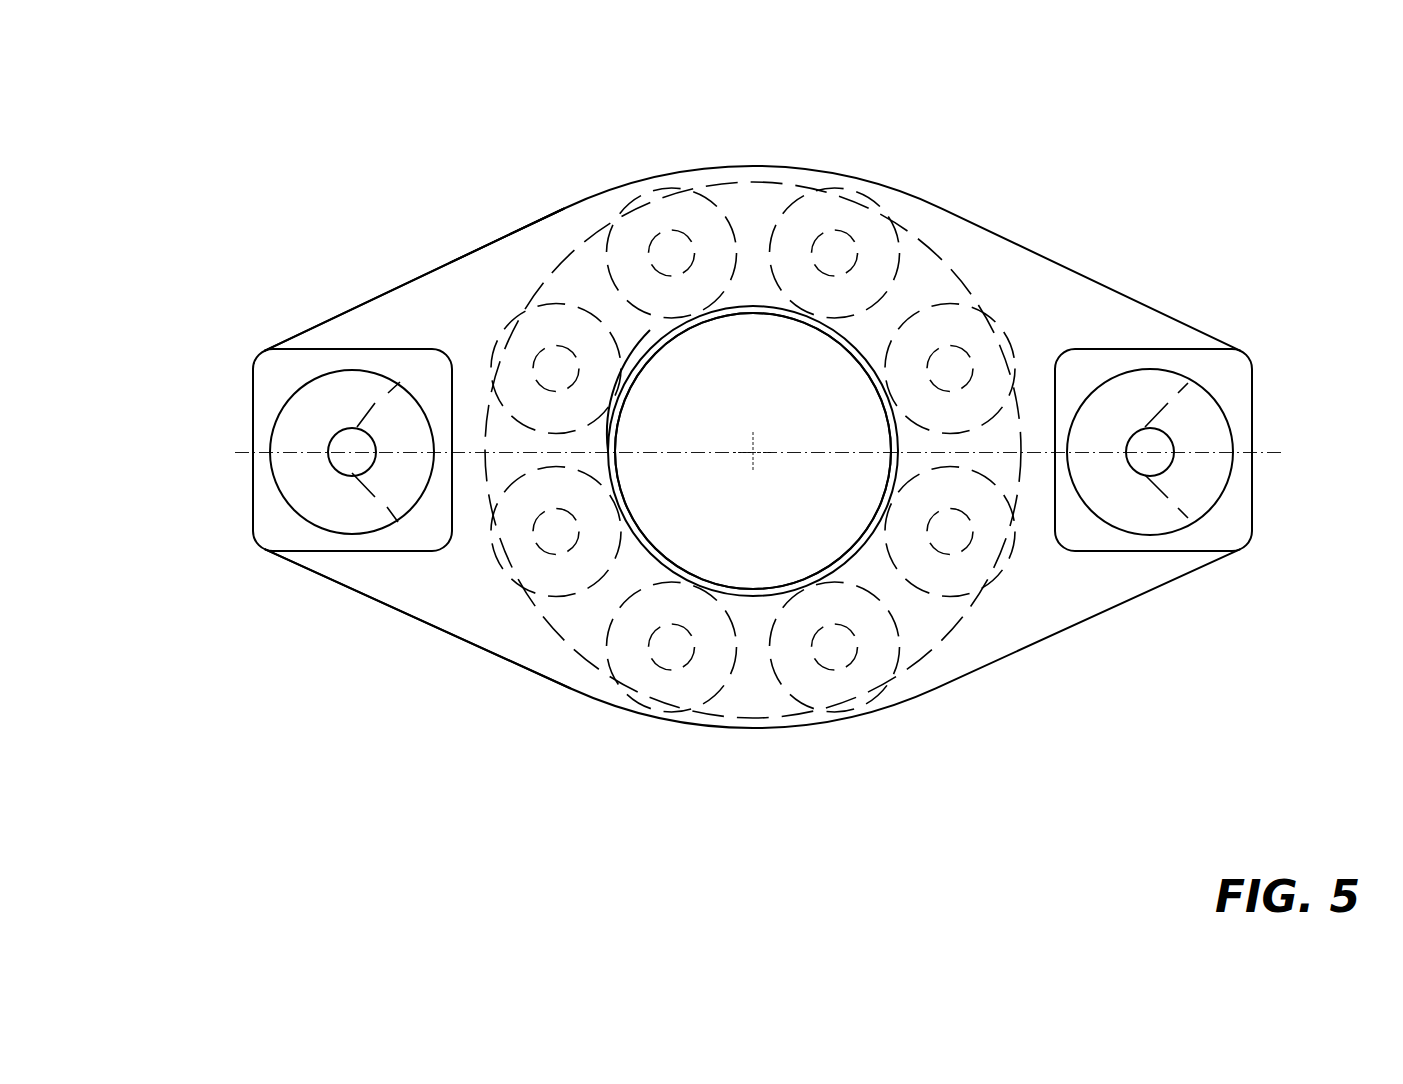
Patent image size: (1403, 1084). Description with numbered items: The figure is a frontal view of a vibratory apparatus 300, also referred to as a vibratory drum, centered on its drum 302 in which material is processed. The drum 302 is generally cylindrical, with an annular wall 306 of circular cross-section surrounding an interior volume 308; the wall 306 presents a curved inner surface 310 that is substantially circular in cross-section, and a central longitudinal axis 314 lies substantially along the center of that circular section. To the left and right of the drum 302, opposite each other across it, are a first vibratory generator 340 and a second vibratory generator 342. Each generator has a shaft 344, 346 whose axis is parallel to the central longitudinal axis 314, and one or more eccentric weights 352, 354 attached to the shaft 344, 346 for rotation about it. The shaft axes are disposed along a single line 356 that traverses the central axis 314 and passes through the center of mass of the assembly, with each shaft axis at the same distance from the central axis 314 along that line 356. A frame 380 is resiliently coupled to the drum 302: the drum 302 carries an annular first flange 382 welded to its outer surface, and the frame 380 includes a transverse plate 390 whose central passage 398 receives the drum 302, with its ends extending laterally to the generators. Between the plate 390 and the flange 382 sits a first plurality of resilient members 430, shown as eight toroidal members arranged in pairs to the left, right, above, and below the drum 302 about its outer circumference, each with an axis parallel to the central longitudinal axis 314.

The vibratory apparatus 300 is at (1045, 130).
The drum 302 is at (752, 305).
The annular wall 306 is at (640, 530).
The interior volume 308 is at (753, 451).
The curved inner surface 310 is at (632, 378).
The central longitudinal axis 314 is at (758, 450).
The first vibratory generator 340 is at (288, 416).
The second vibratory generator 342 is at (1226, 412).
The shaft 344 is at (330, 462).
The shaft 346 is at (1162, 466).
The eccentric weight 352 is at (372, 500).
The eccentric weight 354 is at (1160, 468).
The line 356 is at (250, 454).
The frame 380 is at (498, 242).
The first flange 382 is at (976, 266).
The transverse plate 390 is at (447, 283).
The central passage 398 is at (650, 557).
The first plurality of resilient members 430 is at (872, 224).